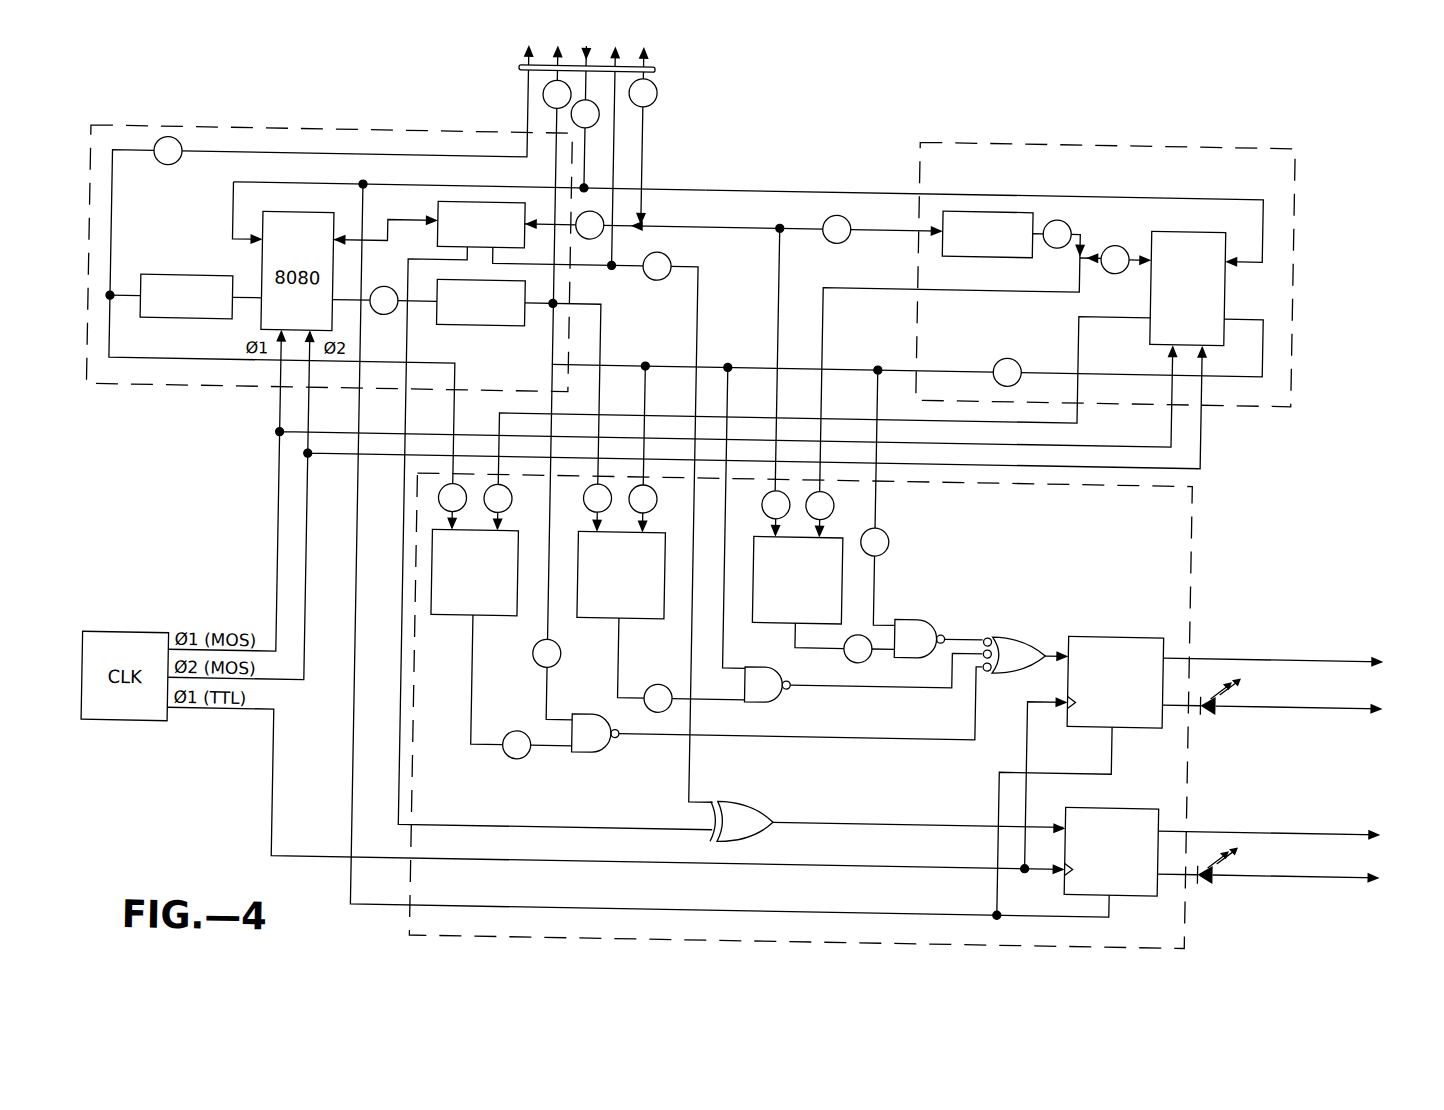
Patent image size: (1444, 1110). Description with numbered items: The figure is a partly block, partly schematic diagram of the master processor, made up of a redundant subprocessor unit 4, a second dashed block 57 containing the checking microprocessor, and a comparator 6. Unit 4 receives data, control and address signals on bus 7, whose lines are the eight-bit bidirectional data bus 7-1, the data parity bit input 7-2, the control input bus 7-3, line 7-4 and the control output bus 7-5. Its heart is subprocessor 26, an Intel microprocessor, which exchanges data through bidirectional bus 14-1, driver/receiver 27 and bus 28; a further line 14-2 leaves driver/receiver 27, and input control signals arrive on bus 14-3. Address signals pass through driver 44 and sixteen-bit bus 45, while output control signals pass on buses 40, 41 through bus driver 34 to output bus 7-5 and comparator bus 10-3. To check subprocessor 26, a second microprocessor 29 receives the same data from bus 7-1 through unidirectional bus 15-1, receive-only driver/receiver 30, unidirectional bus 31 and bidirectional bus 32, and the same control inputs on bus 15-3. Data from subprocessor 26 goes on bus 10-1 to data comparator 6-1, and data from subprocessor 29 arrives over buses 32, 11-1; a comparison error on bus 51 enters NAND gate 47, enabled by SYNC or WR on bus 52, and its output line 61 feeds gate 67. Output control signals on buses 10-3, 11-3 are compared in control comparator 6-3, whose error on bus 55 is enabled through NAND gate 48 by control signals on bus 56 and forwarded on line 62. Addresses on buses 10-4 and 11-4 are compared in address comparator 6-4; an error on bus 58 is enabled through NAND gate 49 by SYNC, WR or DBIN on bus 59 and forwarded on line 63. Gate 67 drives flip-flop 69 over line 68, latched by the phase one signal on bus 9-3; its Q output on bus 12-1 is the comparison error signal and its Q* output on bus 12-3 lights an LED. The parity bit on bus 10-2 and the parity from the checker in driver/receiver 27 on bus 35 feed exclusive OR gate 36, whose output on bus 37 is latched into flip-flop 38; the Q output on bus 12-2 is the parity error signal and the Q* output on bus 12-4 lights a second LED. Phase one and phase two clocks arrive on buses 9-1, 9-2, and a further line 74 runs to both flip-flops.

The subprocessor unit 4 is at (214, 135).
The second computer system (slave unit) 57 is at (1191, 125).
The comparator 6 is at (1192, 503).
The bus 7 is at (648, 71).
The bidirectional data bus 7-1 is at (640, 58).
The data parity bit bus 7-2 is at (614, 56).
The control signal input bus 7-3 is at (568, 52).
The bus address line 7-4 is at (518, 55).
The output bus 7-5 is at (548, 56).
The bidirectional data bus 14-1 is at (630, 232).
The D/R output line 14-2 is at (585, 268).
The control input bus 14-3 is at (425, 190).
The unidirectional data bus 15-1 is at (805, 229).
The control input bus 15-3 is at (829, 190).
The subprocessor 26 is at (258, 262).
The driver/receiver 27 is at (434, 212).
The bus 28 is at (385, 246).
The microprocessor 29 is at (1222, 287).
The driver/receiver 30 is at (991, 253).
The unidirectional bus 31 is at (1078, 231).
The bidirectional bus 32 is at (1132, 268).
The bus driver 34 is at (490, 329).
The bus 40 is at (346, 305).
The bus 41 is at (530, 308).
The address driver 44 is at (183, 327).
The address bus 45 is at (244, 310).
The data bus 10-1 is at (775, 263).
The parity bus 10-2 is at (694, 318).
The output control bus 10-3 is at (603, 345).
The address bus 10-4 is at (118, 370).
The unidirectional data bus 11-1 is at (957, 286).
The output control bus 11-3 is at (940, 366).
The address bus 11-4 is at (1076, 322).
The phase 1 clock bus 9-1 is at (278, 506).
The phase 2 clock bus 9-2 is at (307, 508).
The phase 1 signal bus 9-3 is at (277, 789).
The data comparator 6-1 is at (841, 535).
The control comparator 6-3 is at (638, 622).
The address comparator 6-4 is at (487, 625).
The bus 56 is at (726, 519).
The bus 51 is at (828, 650).
The bus 52 is at (876, 502).
The bus 55 is at (621, 666).
The bus 58 is at (467, 700).
The bus 59 is at (550, 697).
The NAND gate 47 is at (916, 615).
The NAND gate 48 is at (766, 701).
The NAND gate 49 is at (592, 755).
The NAND gate output line 61 is at (975, 636).
The NAND gate output line 62 is at (862, 684).
The NAND gate output line 63 is at (723, 736).
The NAND gate 67 is at (1013, 668).
The NOR gate output line 68 is at (1034, 631).
The flip-flop 69 is at (1146, 630).
The flip-flop 38 is at (1124, 801).
The exclusive OR gate 36 is at (754, 808).
The bus 35 is at (498, 830).
The bus 37 is at (829, 820).
The reset line 74 is at (745, 909).
The comparison error bus 12-1 is at (1376, 651).
The parity error bus 12-2 is at (1337, 815).
The LED bus 12-3 is at (1360, 697).
The LED bus 12-4 is at (1290, 866).